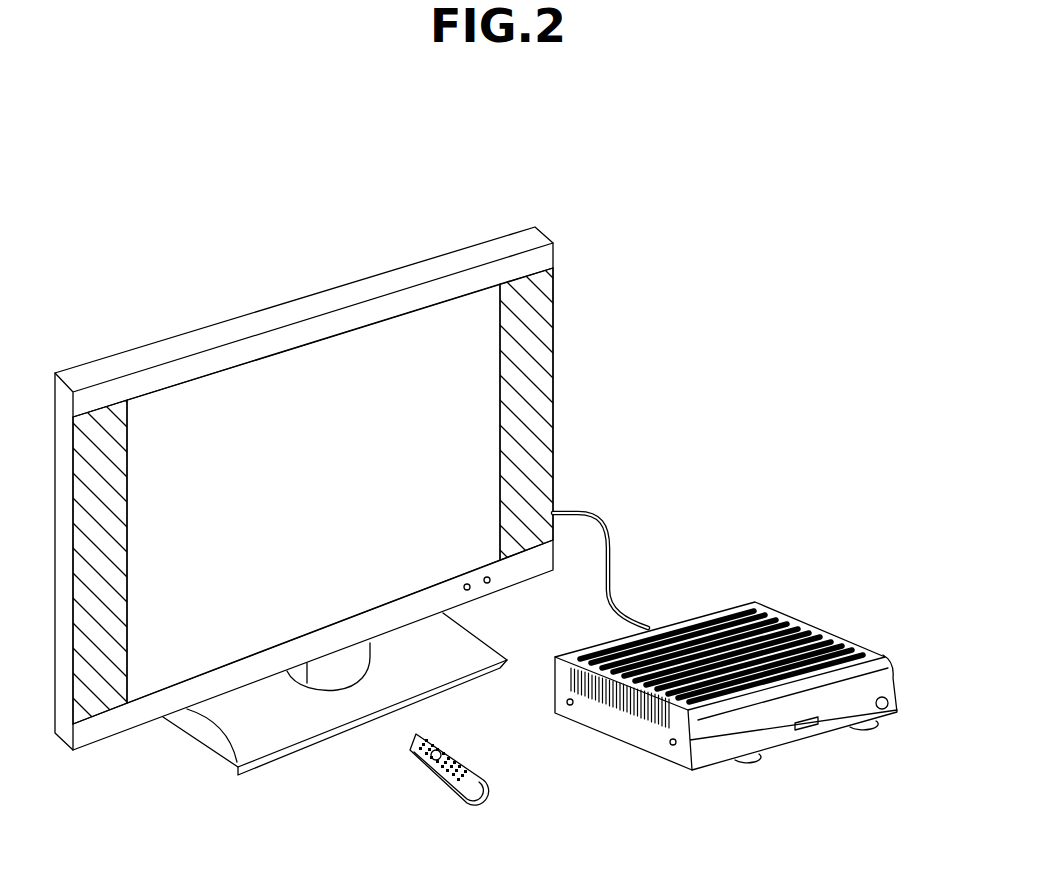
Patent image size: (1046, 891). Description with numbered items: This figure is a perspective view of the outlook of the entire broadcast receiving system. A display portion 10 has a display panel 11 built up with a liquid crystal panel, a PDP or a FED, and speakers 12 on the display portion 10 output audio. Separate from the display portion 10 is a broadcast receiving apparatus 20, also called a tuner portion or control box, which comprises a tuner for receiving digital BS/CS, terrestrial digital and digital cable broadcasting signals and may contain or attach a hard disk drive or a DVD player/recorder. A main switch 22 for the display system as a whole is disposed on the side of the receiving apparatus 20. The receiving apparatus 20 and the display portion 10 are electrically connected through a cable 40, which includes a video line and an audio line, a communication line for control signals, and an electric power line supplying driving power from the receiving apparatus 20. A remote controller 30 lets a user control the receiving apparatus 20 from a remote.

The display portion 10 is at (377, 232).
The display panel 11 is at (276, 387).
The speakers 12 is at (538, 396).
The broadcast receiving apparatus 20 is at (710, 618).
The main switch 22 is at (891, 703).
The remote controller 30 is at (437, 771).
The cable 40 is at (593, 516).